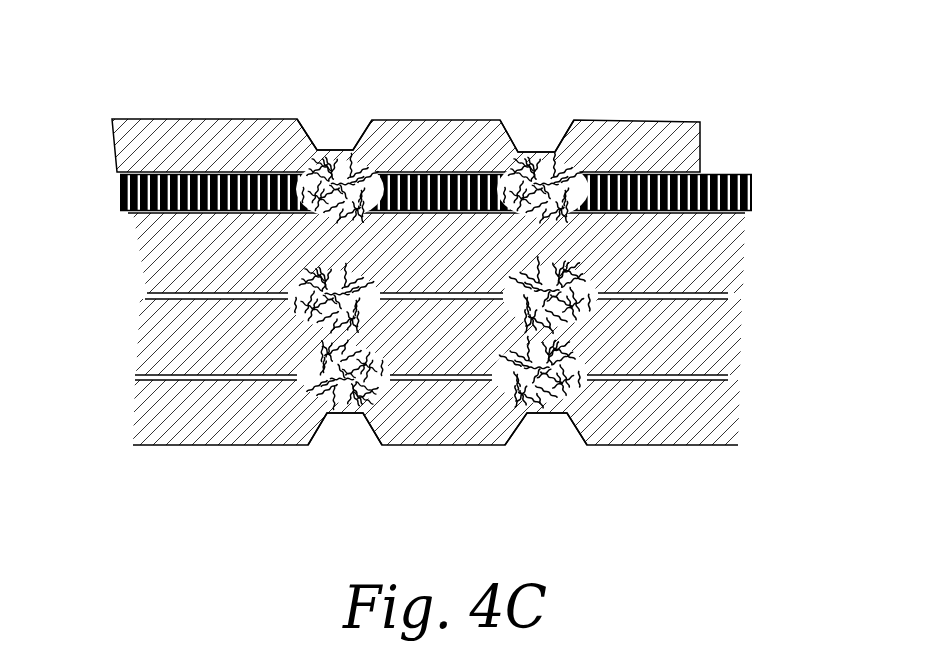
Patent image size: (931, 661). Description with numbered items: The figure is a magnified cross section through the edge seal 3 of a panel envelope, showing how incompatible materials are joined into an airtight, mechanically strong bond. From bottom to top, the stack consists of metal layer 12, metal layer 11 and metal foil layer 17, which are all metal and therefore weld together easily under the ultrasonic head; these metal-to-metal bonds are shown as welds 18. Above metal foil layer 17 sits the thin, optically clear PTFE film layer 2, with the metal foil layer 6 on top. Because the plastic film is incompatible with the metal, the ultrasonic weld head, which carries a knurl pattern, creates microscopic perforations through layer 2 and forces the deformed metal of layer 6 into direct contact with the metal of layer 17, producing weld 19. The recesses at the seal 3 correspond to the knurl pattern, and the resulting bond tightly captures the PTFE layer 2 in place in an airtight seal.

The optically clear film layer 2 is at (750, 178).
The edge seal 3 is at (553, 130).
The metal foil layer 6 is at (128, 152).
The metal layer 11 is at (167, 325).
The metal layer 12 is at (163, 410).
The metal foil layer 17 is at (163, 257).
The metal-to-metal welds 18 is at (577, 392).
The weld 19 is at (560, 172).